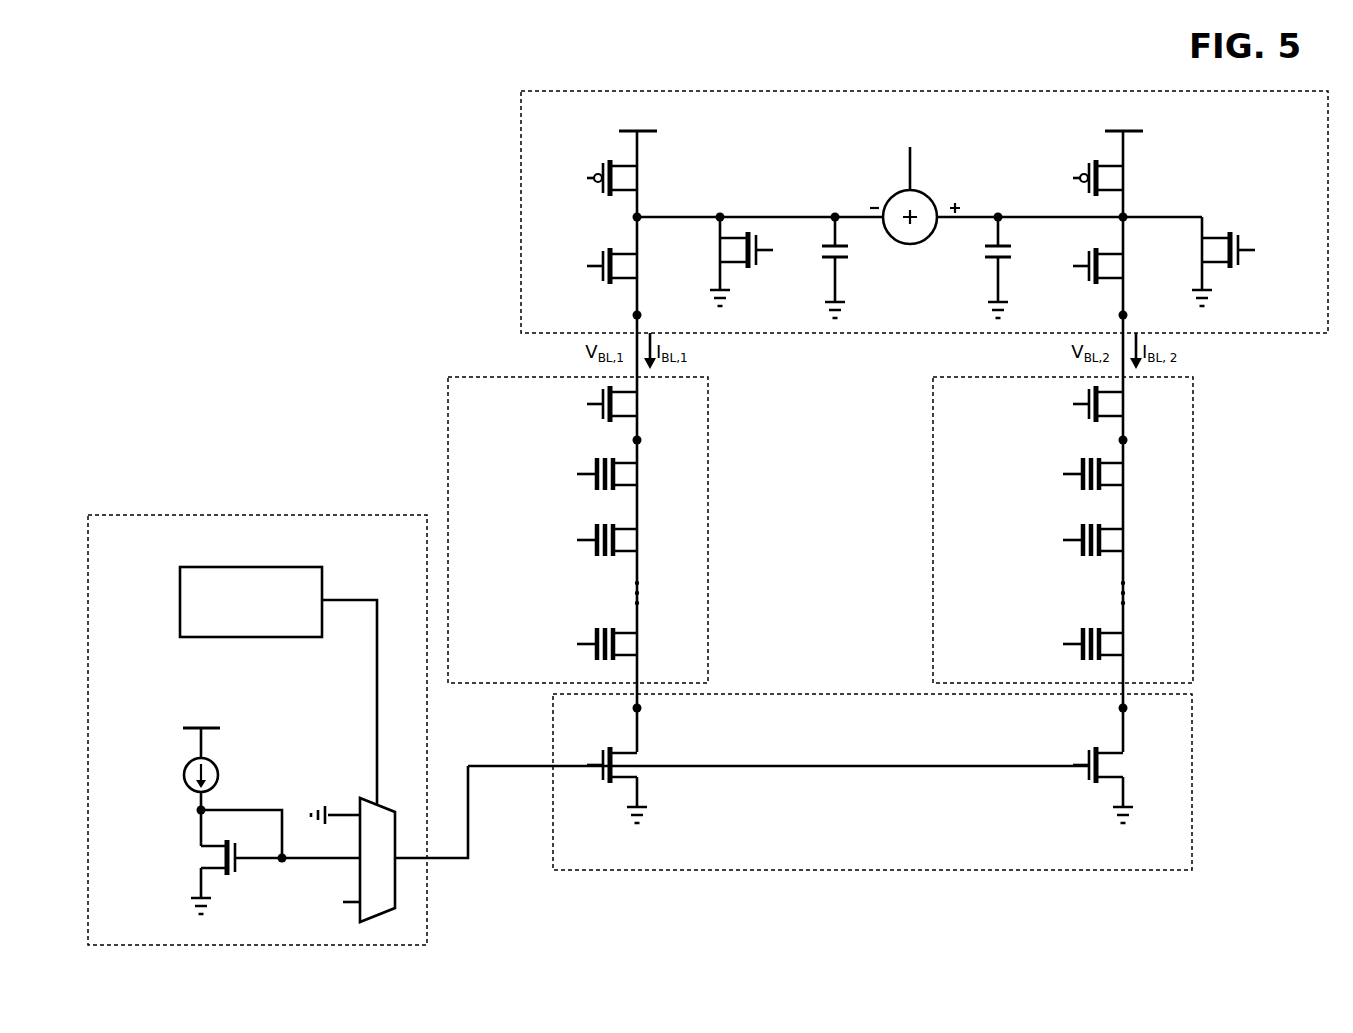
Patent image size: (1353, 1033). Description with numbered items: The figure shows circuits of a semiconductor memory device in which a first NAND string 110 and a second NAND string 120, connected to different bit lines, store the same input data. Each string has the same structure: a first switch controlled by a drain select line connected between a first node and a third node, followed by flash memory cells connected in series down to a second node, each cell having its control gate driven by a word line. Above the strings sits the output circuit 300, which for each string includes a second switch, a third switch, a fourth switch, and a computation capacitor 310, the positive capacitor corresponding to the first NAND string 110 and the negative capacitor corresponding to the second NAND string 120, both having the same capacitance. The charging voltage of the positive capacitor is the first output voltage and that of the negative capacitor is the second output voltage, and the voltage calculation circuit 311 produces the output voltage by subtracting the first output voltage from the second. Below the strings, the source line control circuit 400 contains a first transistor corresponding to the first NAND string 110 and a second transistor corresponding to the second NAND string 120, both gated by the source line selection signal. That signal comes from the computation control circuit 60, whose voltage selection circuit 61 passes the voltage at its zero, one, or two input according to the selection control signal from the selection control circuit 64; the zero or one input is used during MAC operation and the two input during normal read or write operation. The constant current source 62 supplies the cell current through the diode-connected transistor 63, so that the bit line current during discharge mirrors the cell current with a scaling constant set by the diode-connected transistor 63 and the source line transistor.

The computation control circuit 60 is at (247, 515).
The voltage selection circuit 61 is at (358, 807).
The constant current source 62 is at (182, 770).
The diode-connected transistor 63 is at (195, 850).
The selection control circuit 64 is at (180, 602).
The first NAND string 110 is at (448, 415).
The second NAND string 120 is at (933, 542).
The output circuit 300 is at (877, 333).
The computation capacitor 310 is at (845, 270).
The voltage calculation circuit 311 is at (912, 245).
The source line control circuit 400 is at (1195, 805).